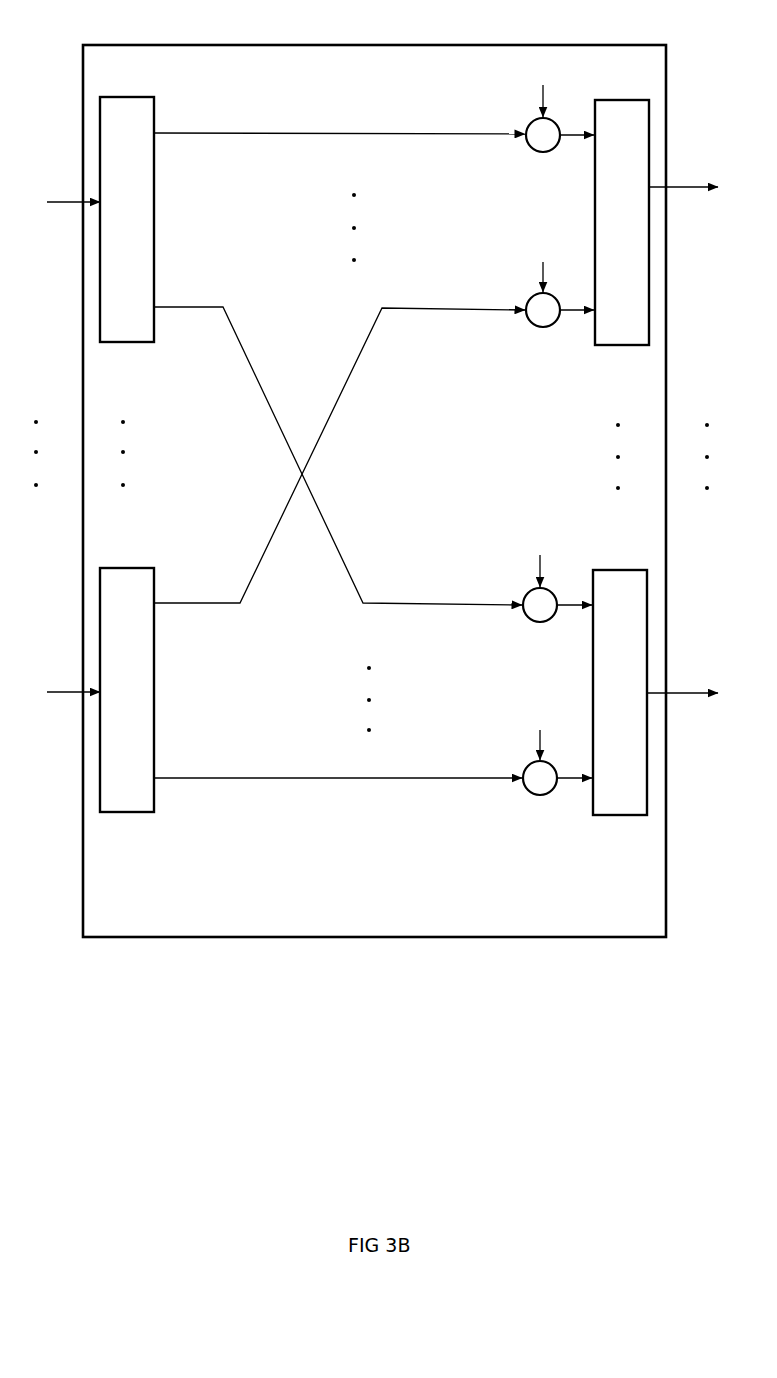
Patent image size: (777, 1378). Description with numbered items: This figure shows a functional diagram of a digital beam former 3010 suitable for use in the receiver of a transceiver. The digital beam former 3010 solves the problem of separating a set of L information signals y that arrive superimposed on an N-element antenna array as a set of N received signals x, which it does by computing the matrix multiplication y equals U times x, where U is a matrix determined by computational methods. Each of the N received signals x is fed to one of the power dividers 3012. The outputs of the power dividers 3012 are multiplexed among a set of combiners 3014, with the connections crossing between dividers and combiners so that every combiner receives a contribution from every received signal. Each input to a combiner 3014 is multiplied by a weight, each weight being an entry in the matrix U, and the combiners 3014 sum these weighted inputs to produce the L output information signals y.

The digital beam former 3010 is at (605, 45).
The power dividers 3012 is at (103, 343).
The combiners 3014 is at (643, 346).